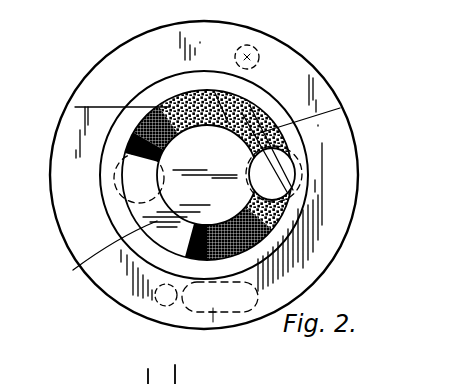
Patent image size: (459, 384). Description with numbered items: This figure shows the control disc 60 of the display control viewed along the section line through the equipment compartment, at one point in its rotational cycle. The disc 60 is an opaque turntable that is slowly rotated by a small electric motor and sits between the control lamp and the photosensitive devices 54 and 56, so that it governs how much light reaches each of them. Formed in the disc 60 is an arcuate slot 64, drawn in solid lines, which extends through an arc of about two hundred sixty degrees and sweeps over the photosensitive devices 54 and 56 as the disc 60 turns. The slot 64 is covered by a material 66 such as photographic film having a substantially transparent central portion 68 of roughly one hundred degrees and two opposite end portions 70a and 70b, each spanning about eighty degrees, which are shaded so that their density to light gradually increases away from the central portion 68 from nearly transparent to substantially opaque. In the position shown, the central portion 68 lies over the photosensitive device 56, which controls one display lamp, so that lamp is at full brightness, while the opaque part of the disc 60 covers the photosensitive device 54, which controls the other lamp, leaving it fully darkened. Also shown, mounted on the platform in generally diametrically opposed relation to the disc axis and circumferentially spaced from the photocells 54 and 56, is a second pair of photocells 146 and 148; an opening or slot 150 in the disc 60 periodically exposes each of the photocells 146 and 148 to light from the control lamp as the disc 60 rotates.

The photosensitive device 54 is at (115, 208).
The photosensitive device 56 is at (303, 173).
The disc 60 is at (322, 243).
The arcuate slot 64 is at (256, 154).
The material 66 is at (94, 258).
The central portion 68 is at (340, 108).
The end portion 70a is at (300, 222).
The end portion 70b is at (75, 107).
The photocell 146 is at (155, 302).
The photocell 148 is at (257, 45).
The opening or slot 150 is at (210, 316).